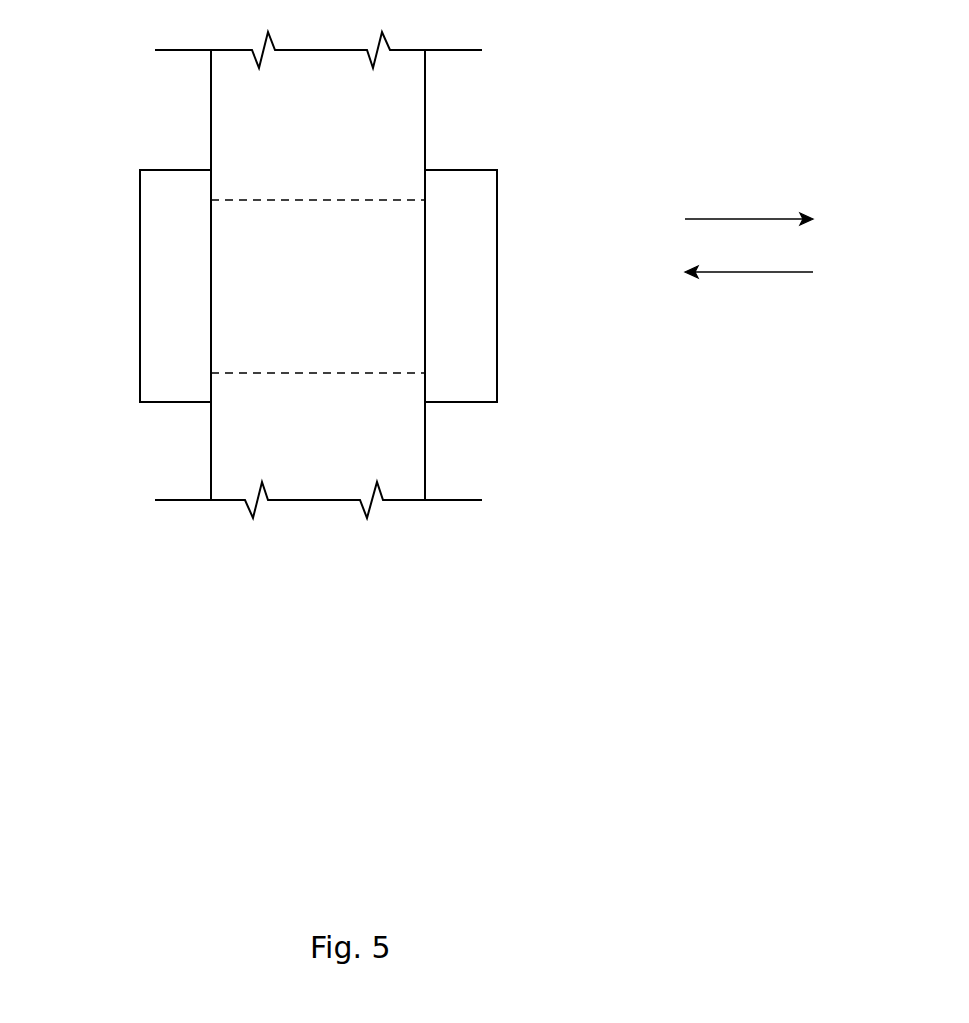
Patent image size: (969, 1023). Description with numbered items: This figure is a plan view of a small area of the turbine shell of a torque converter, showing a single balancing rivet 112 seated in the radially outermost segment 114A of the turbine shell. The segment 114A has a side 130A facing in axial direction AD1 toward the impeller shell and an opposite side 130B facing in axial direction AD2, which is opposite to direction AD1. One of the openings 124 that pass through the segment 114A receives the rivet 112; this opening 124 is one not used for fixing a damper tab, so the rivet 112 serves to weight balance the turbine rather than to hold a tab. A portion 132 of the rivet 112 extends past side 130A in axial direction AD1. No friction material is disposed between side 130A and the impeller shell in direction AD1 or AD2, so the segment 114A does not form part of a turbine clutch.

The rivet 112 is at (347, 275).
The radially outermost segment 114A is at (395, 452).
The openings 124 is at (285, 200).
The side 130A is at (425, 103).
The side 130B is at (211, 435).
The portion 132 is at (497, 357).
The axial direction AD1 is at (725, 219).
The axial direction AD2 is at (747, 272).